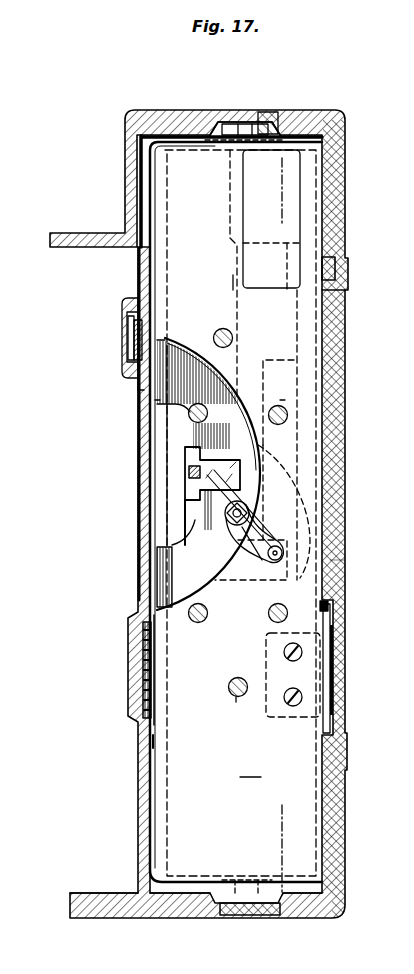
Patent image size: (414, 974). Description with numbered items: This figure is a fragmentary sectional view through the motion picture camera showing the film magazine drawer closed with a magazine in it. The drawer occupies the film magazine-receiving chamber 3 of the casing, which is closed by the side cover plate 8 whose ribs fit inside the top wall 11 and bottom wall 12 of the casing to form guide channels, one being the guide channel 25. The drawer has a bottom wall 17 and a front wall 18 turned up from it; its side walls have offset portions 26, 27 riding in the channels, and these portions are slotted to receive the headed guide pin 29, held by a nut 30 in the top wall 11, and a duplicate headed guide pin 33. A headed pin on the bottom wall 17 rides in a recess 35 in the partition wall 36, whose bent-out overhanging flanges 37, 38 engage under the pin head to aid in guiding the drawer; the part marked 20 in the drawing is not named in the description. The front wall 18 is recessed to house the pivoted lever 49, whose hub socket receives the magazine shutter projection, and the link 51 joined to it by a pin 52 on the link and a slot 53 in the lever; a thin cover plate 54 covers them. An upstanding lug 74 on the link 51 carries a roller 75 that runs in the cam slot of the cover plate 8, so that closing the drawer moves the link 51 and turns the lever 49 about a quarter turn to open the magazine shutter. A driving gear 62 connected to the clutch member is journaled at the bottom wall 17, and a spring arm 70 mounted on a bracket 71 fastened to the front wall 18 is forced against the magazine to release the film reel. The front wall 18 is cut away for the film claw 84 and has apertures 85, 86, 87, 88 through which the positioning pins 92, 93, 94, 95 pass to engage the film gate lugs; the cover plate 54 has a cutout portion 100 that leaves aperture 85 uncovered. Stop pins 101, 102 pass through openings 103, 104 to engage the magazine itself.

The film magazine-receiving chamber 3 is at (152, 740).
The side cover plate 8 is at (332, 563).
The top wall 11 is at (160, 112).
The bottom wall 12 is at (185, 930).
The bottom wall 17 is at (158, 815).
The front wall 18 is at (250, 767).
The tumbler assembly 20 is at (290, 162).
The guide channel 25 is at (288, 580).
The offset portion 26 is at (270, 118).
The offset portion 27 is at (245, 922).
The headed guide pin 29 is at (215, 128).
The nut 30 is at (242, 126).
The headed guide pin 33 is at (230, 878).
The recess 35 is at (126, 330).
The partition wall 36 is at (143, 515).
The overhanging flange 37 is at (130, 302).
The overhanging flange 38 is at (132, 366).
The pivoted lever 49 is at (292, 505).
The link 51 is at (302, 345).
The pin 52 is at (332, 527).
The slot 53 is at (247, 564).
The cover plate 54 is at (178, 778).
The driving gear 62 is at (142, 657).
The spring arm 70 is at (330, 690).
The bracket 71 is at (330, 655).
The upstanding lug 74 is at (340, 295).
The roller 75 is at (337, 270).
The film claw 84 is at (188, 473).
The aperture 85 is at (188, 418).
The aperture 86 is at (288, 414).
The aperture 87 is at (270, 618).
The aperture 88 is at (200, 623).
The pin 92 is at (288, 422).
The pin 93 is at (190, 420).
The pin 94 is at (172, 610).
The pin 95 is at (325, 600).
The cutout portion 100 is at (207, 358).
The stop pin 101 is at (233, 338).
The stop pin 102 is at (228, 688).
The opening 103 is at (220, 330).
The opening 104 is at (236, 697).